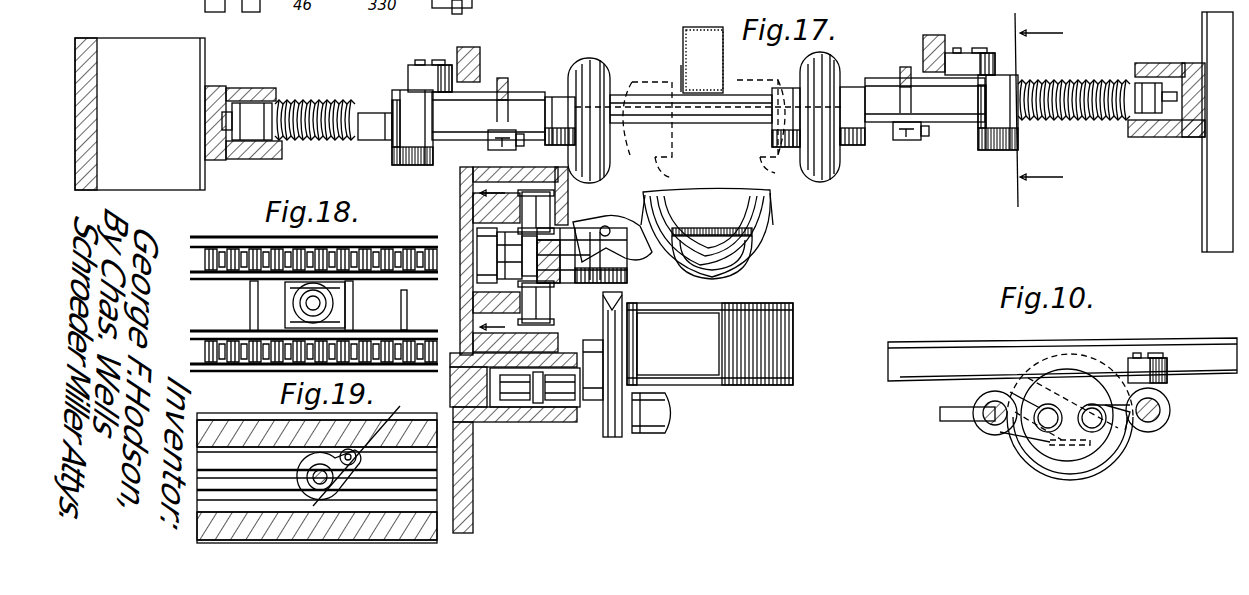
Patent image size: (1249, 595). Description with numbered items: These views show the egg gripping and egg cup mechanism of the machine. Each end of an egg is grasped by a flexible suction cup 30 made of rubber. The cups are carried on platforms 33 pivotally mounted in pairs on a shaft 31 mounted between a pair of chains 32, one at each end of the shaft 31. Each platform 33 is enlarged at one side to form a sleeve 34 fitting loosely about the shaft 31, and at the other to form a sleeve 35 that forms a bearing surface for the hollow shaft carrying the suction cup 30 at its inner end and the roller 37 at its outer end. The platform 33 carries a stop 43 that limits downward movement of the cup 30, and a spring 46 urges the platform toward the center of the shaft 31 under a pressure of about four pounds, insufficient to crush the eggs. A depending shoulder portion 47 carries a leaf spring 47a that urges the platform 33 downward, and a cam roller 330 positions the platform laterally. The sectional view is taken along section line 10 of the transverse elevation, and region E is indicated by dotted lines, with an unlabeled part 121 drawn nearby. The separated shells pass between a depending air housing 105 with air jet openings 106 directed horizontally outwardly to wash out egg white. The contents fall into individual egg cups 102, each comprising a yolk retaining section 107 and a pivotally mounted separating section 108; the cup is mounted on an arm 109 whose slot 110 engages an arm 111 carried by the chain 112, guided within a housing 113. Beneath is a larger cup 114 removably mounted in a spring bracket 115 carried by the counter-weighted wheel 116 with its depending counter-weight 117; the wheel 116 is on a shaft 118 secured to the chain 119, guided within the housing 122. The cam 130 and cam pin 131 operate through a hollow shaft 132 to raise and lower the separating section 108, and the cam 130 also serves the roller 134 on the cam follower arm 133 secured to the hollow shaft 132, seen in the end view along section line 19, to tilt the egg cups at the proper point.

In FIG. 17, the section line 10— 10 is at (1039, 110).
In FIG. 17, the section line 19— 19 is at (495, 261).
In FIG. 17, the flexible suction cup 30 is at (598, 62).
In FIG. 10, the flexible suction cup 30 is at (1096, 476).
In FIG. 17, the shaft 31 is at (722, 120).
In FIG. 10, the shaft 31 is at (1162, 420).
In FIG. 17, the chains 32 is at (262, 105).
In FIG. 10, the platform 33 is at (1123, 454).
In FIG. 10, the sleeve 34 is at (1166, 406).
In FIG. 17, the sleeve 35 is at (478, 116).
In FIG. 17, the roller 37 is at (393, 152).
In FIG. 10, the roller 37 is at (1058, 455).
In FIG. 17, the stop 43 is at (510, 86).
In FIG. 10, the stop 43 is at (980, 402).
In FIG. 17, the spring 46 is at (320, 104).
In FIG. 17, the depending shoulder portion 47 is at (490, 146).
In FIG. 10, the depending shoulder portion 47 is at (1122, 465).
In FIG. 17, the leaf spring 47a is at (516, 150).
In FIG. 10, the leaf spring 47a is at (1012, 440).
In FIG. 17, the egg cup 102 is at (767, 233).
In FIG. 17, the depending air housing 105 is at (683, 42).
In FIG. 17, the air jet openings 106 is at (683, 84).
In FIG. 17, the yolk retaining section 107 is at (745, 258).
In FIG. 17, the separating section 108 is at (772, 199).
In FIG. 17, the arm 109 is at (600, 222).
In FIG. 17, the slot 110 is at (603, 226).
In FIG. 17, the arm 111 is at (594, 276).
In FIG. 18, the arm 111 is at (285, 296).
In FIG. 17, the chain 112 is at (552, 214).
In FIG. 18, the chain 112 is at (400, 310).
In FIG. 17, the housing 113 is at (460, 177).
In FIG. 17, the egg receiving cup 114 is at (794, 327).
In FIG. 17, the spring bracket 115 is at (687, 326).
In FIG. 17, the counter-weighted wheel 116 is at (624, 301).
In FIG. 17, the counter-weight 117 is at (652, 433).
In FIG. 17, the shaft 118 is at (580, 337).
In FIG. 17, the chain 119 is at (560, 408).
In FIG. 17, the link 121 is at (655, 212).
In FIG. 17, the housing 122 is at (473, 486).
In FIG. 17, the cam 130 is at (478, 264).
In FIG. 19, the cam 130 is at (226, 480).
In FIG. 17, the cam pin 131 is at (480, 275).
In FIG. 18, the cam pin 131 is at (297, 308).
In FIG. 19, the cam pin 131 is at (345, 477).
In FIG. 17, the hollow shaft 132 is at (480, 300).
In FIG. 17, the cam follower arm 133 is at (476, 205).
In FIG. 19, the cam follower arm 133 is at (283, 416).
In FIG. 17, the roller 134 is at (478, 242).
In FIG. 19, the roller 134 is at (373, 449).
In FIG. 17, the cam roller 330 is at (414, 68).
In FIG. 10, the cam roller 330 is at (1150, 362).
In FIG. 17, the region E is at (705, 132).